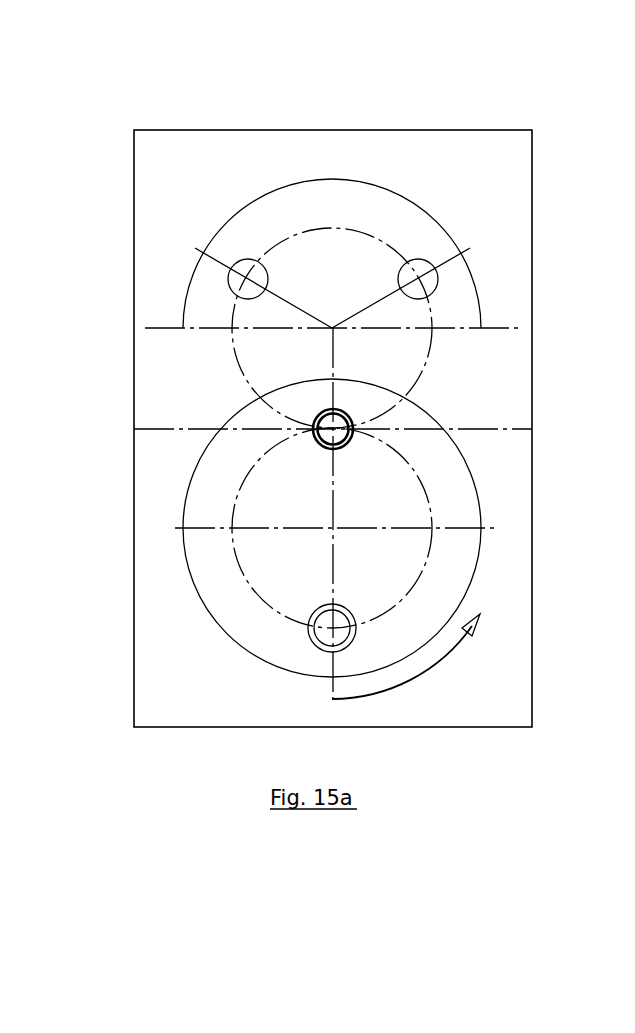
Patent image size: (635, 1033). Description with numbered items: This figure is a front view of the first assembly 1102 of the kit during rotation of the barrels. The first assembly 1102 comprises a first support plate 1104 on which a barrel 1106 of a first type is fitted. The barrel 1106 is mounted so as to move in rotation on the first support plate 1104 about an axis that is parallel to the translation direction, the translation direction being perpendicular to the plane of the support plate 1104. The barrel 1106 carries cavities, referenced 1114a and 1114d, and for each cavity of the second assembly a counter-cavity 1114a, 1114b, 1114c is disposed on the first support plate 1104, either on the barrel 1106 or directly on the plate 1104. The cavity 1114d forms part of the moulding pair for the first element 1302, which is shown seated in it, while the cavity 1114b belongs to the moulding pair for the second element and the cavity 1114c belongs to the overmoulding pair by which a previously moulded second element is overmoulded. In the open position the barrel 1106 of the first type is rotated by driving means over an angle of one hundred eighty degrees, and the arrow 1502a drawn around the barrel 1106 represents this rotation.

The first assembly 1102 is at (428, 74).
The first support plate 1104 is at (497, 175).
The barrel of a first type 1106 is at (460, 498).
The cavity 1114a is at (325, 635).
The cavity 1114b is at (420, 268).
The cavity 1114c is at (240, 273).
The cavity 1114d is at (357, 425).
The first element 1302 is at (312, 429).
The arrow 1502a is at (420, 658).